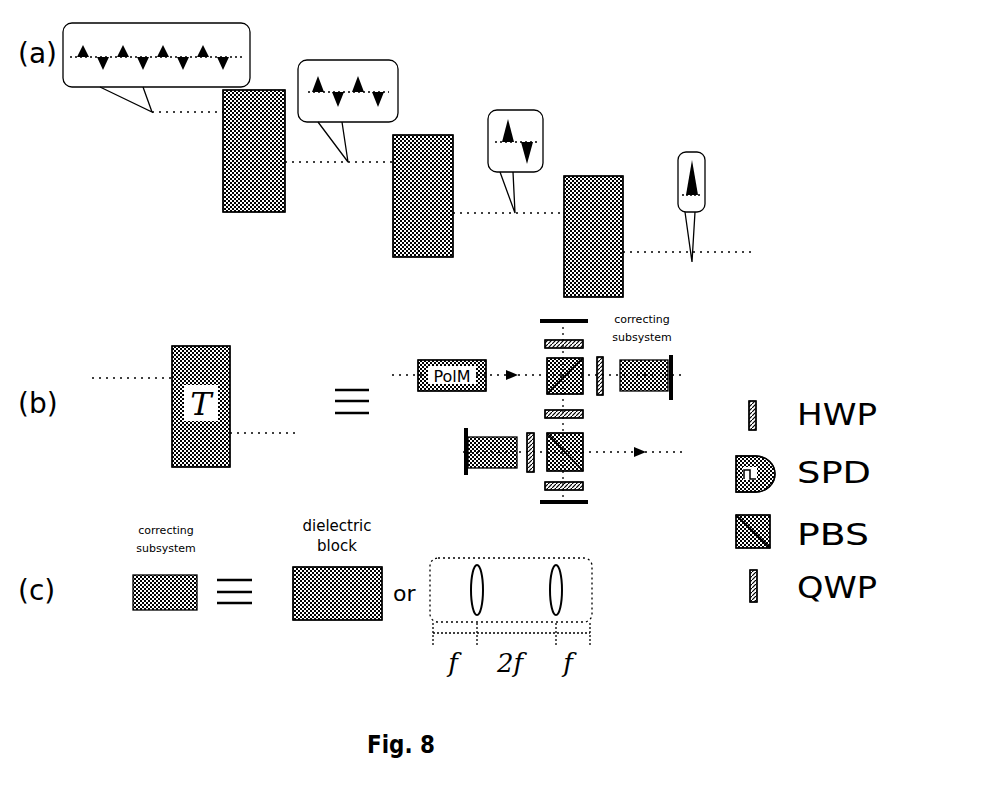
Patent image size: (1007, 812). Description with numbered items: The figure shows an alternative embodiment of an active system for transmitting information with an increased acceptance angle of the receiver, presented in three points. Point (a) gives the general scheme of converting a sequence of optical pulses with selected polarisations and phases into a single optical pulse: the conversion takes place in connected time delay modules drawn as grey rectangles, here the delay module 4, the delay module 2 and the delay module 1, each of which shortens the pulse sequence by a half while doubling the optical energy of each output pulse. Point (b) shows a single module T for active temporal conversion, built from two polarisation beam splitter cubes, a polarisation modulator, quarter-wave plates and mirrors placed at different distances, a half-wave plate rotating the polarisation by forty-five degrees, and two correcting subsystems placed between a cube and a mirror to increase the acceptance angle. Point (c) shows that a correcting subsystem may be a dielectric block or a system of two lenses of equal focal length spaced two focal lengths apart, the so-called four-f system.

The 4τ delay stage 4 is at (254, 151).
The 2τ delay stage 2 is at (423, 196).
The τ delay stage 1 is at (593, 236).